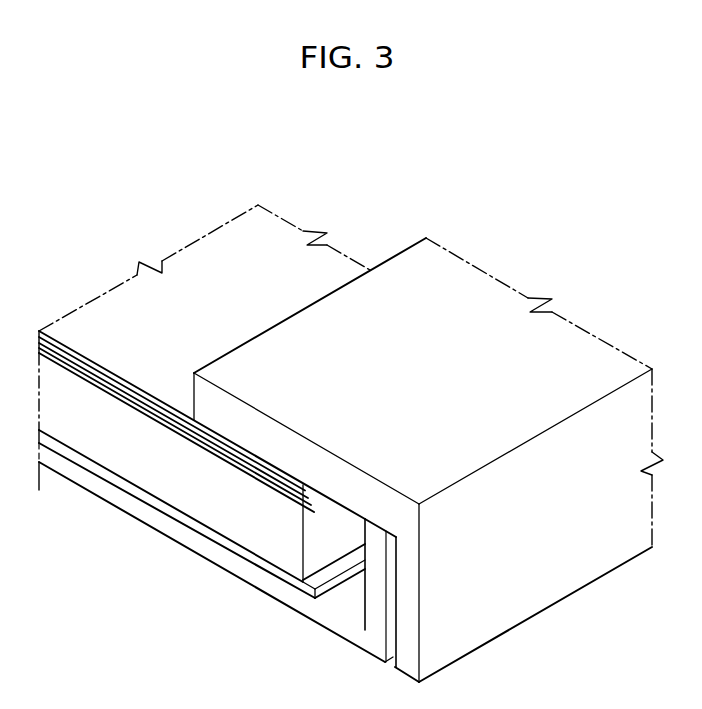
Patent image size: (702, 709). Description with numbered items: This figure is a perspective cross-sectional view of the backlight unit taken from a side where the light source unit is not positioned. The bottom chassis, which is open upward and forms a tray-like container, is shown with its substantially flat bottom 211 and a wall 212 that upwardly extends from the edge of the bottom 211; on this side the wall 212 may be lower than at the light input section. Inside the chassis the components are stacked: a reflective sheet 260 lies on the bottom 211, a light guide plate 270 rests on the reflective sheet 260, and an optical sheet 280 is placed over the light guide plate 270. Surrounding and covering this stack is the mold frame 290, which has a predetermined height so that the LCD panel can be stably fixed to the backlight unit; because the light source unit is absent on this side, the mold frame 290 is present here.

The bottom 211 is at (97, 492).
The wall 212 is at (370, 595).
The reflective sheet 260 is at (153, 497).
The light guide plate 270 is at (195, 503).
The optical sheet 280 is at (102, 312).
The mold frame 290 is at (587, 571).